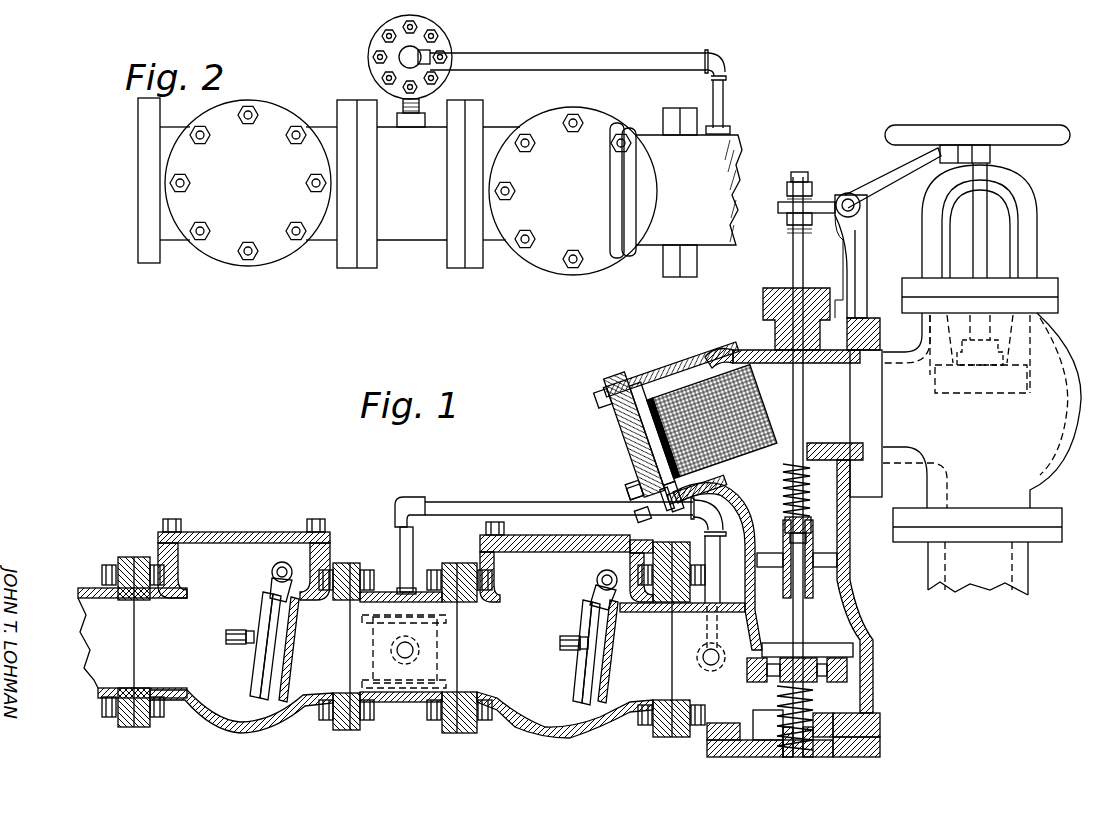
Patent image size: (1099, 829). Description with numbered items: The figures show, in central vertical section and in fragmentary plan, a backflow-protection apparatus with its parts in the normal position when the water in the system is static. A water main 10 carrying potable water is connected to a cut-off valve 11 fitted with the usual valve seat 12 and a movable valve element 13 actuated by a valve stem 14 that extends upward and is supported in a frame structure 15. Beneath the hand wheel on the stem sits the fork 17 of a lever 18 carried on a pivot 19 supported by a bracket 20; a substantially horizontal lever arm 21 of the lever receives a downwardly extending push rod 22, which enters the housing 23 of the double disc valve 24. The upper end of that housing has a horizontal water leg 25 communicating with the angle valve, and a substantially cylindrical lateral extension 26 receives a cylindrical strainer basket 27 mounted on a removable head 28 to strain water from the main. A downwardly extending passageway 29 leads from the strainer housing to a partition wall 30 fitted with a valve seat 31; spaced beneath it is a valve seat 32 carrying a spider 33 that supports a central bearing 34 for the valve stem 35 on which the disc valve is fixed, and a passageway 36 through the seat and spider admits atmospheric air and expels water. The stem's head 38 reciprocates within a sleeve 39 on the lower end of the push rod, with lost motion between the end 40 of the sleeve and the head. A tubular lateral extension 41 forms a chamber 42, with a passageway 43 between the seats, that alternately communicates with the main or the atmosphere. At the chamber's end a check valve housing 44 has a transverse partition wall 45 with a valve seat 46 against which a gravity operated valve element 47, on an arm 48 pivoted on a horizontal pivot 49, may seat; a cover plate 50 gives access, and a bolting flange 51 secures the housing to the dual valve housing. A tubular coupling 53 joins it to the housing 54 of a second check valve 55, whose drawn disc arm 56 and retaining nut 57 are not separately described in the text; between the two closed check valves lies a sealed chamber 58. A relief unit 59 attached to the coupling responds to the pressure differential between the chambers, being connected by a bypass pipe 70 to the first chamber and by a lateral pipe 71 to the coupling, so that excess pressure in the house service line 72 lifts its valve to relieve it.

In FIG. 1, the water main 10 is at (1020, 570).
In FIG. 1, the cut-off valve 11 is at (969, 340).
In FIG. 1, the valve seat 12 is at (1066, 462).
In FIG. 1, the movable valve element 13 is at (1038, 330).
In FIG. 1, the valve stem 14 is at (990, 216).
In FIG. 1, the frame structure 15 is at (1025, 262).
In FIG. 1, the fork 17 is at (956, 145).
In FIG. 1, the lever 18 is at (902, 180).
In FIG. 1, the pivot 19 is at (848, 193).
In FIG. 1, the bracket 20 is at (858, 270).
In FIG. 1, the lever arm 21 is at (778, 207).
In FIG. 1, the push rod 22 is at (793, 265).
In FIG. 1, the valve housing 23 is at (780, 537).
In FIG. 1, the double disc valve 24 is at (864, 676).
In FIG. 1, the water leg 25 is at (778, 385).
In FIG. 1, the lateral extension 26 is at (665, 372).
In FIG. 1, the strainer basket 27 is at (703, 386).
In FIG. 1, the removable head 28 is at (620, 430).
In FIG. 1, the passageway 29 is at (648, 492).
In FIG. 1, the partition wall 30 is at (850, 648).
In FIG. 1, the valve seat 31 is at (852, 660).
In FIG. 1, the valve seat 32 is at (875, 722).
In FIG. 1, the spider 33 is at (835, 755).
In FIG. 1, the central bearing 34 is at (808, 758).
In FIG. 1, the valve stem 35 is at (798, 757).
In FIG. 1, the passageway 36 is at (765, 735).
In FIG. 1, the head 38 is at (813, 535).
In FIG. 1, the sleeve 39 is at (813, 580).
In FIG. 1, the end of sleeve 40 is at (806, 492).
In FIG. 1, the tubular lateral extension 41 is at (728, 600).
In FIG. 2, the chamber 42 is at (735, 140).
In FIG. 1, the chamber 42 is at (742, 630).
In FIG. 1, the passageway 43 is at (735, 730).
In FIG. 1, the check valve housing 44 is at (591, 627).
In FIG. 1, the transverse partition wall 45 is at (590, 720).
In FIG. 1, the valve seat 46 is at (680, 665).
In FIG. 1, the gravity operated valve element 47 is at (578, 685).
In FIG. 1, the arm 48 is at (588, 616).
In FIG. 1, the pivot 49 is at (596, 580).
In FIG. 1, the cover plate 50 is at (540, 540).
In FIG. 1, the bolting flange 51 is at (700, 527).
In FIG. 2, the tubular coupling 53 is at (416, 240).
In FIG. 1, the tubular coupling 53 is at (408, 718).
In FIG. 1, the housing 54 is at (242, 722).
In FIG. 1, the second check valve 55 is at (256, 665).
In FIG. 1, the disc arm 56 is at (282, 672).
In FIG. 1, the nut 57 is at (258, 696).
In FIG. 1, the chamber 58 is at (393, 632).
In FIG. 2, the unit 59 is at (358, 74).
In FIG. 1, the unit 59 is at (446, 649).
In FIG. 2, the bypass pipe 70 is at (598, 58).
In FIG. 1, the bypass pipe 70 is at (462, 504).
In FIG. 2, the lateral pipe 71 is at (428, 110).
In FIG. 1, the lateral pipe 71 is at (413, 652).
In FIG. 1, the house service line 72 is at (90, 588).